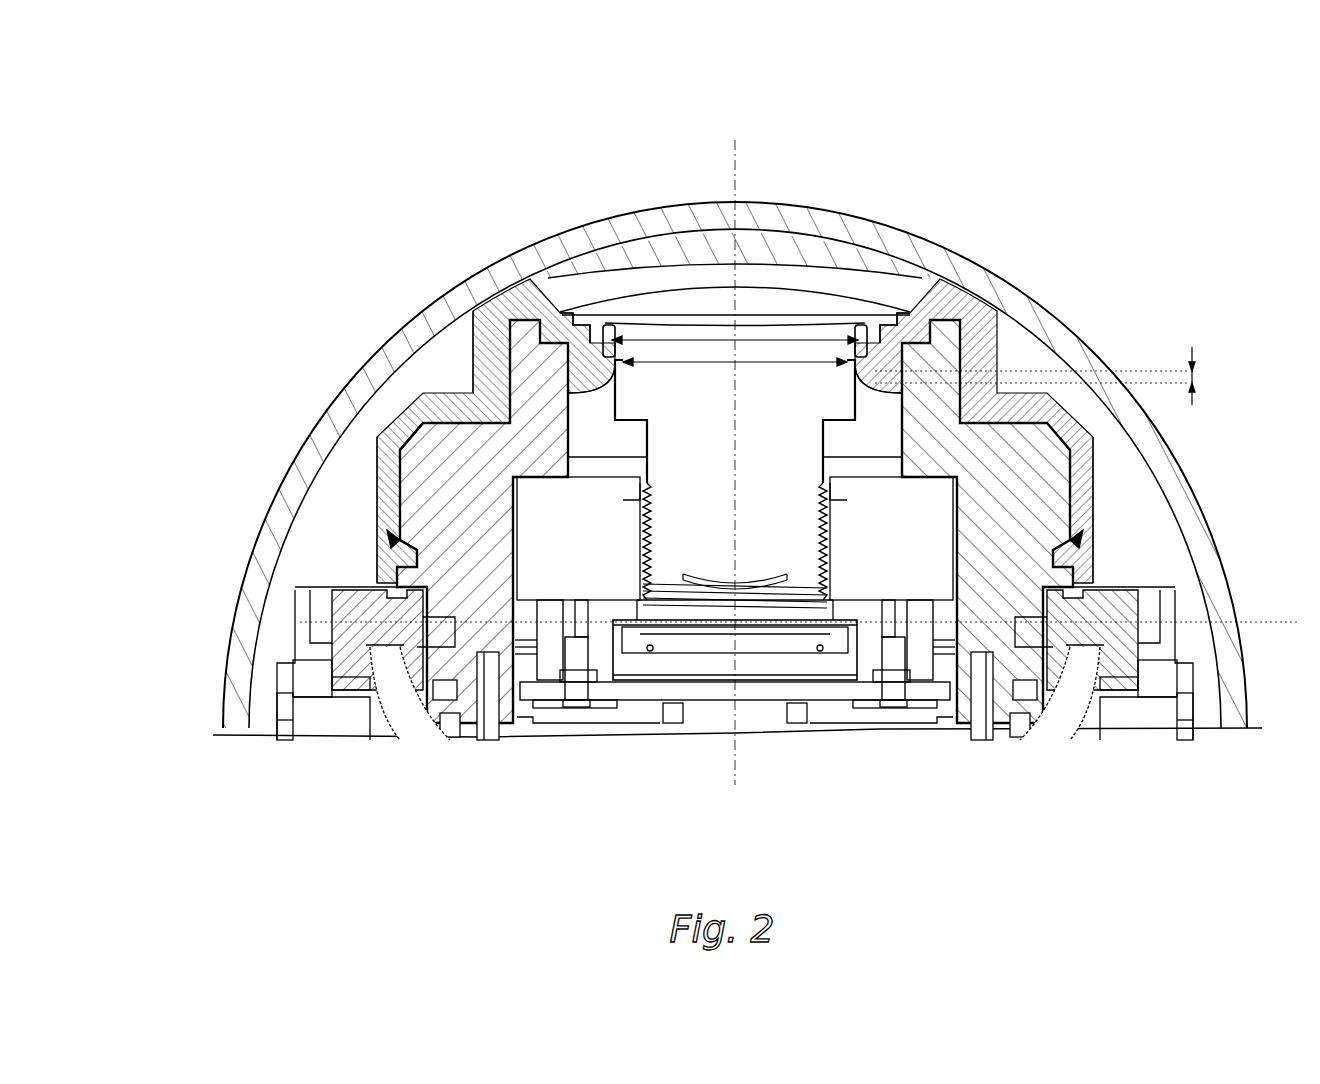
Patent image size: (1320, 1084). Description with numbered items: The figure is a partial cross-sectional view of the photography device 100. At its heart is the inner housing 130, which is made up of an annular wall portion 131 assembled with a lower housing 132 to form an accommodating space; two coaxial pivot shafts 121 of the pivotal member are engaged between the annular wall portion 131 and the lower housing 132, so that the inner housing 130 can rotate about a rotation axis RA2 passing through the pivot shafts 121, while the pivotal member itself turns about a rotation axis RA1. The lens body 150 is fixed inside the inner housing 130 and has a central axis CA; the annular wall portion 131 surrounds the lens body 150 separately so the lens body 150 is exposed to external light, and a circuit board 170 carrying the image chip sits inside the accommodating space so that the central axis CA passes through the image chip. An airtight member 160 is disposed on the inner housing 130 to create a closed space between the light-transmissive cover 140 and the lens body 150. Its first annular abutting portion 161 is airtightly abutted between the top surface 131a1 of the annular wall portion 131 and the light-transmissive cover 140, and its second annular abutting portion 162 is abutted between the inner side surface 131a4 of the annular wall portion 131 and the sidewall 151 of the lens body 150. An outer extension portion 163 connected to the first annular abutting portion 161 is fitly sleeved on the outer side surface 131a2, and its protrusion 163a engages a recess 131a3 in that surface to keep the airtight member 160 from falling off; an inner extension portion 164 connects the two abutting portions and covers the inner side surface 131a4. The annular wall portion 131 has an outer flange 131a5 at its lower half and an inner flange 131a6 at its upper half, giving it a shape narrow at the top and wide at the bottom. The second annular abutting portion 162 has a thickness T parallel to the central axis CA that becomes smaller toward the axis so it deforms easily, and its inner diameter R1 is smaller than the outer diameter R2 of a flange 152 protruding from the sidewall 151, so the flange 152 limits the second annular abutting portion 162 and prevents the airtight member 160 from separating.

The photography device 100 is at (1127, 120).
The pivot shaft 121 is at (1140, 597).
The inner housing 130 is at (515, 812).
The annular wall portion 131 is at (487, 745).
The top surface 131a1 is at (485, 282).
The outer side surface 131a2 is at (390, 440).
The recess 131a3 is at (373, 552).
The inner side surface 131a4 is at (530, 353).
The outer flange 131a5 is at (373, 520).
The inner flange 131a6 is at (530, 386).
The lower housing 132 is at (410, 745).
The light-transmissive cover 140 is at (950, 270).
The lens body 150 is at (790, 320).
The sidewall 151 is at (612, 412).
The flange 152 is at (607, 325).
The airtight member 160 is at (150, 820).
The first annular abutting portion 161 is at (470, 303).
The second annular abutting portion 162 is at (583, 318).
The outer extension portion 163 is at (368, 505).
The protrusion 163a is at (300, 590).
The inner extension portion 164 is at (540, 300).
The circuit board 170 is at (913, 692).
The inner diameter R1 is at (735, 376).
The outer diameter R2 is at (700, 336).
The thickness T is at (1047, 376).
The rotation axis RA1 is at (1263, 624).
The rotation axis RA2 is at (733, 153).
The central axis CA is at (738, 153).